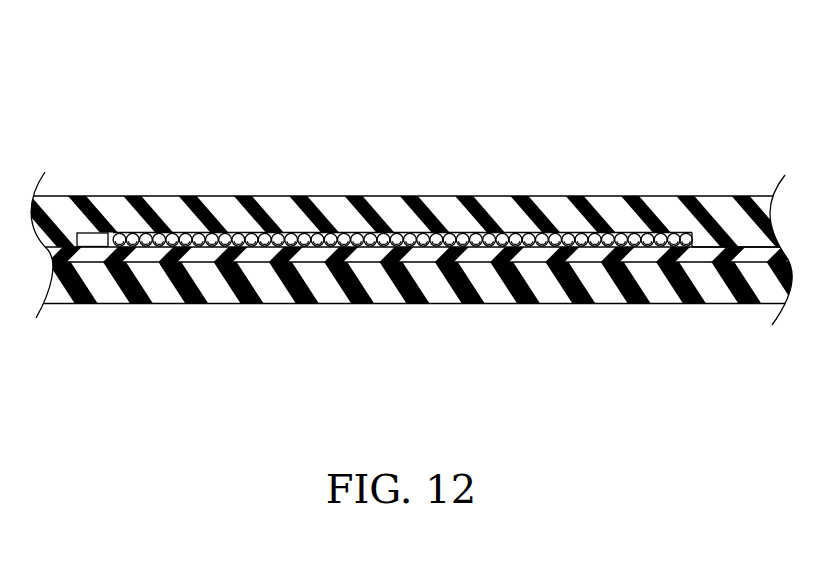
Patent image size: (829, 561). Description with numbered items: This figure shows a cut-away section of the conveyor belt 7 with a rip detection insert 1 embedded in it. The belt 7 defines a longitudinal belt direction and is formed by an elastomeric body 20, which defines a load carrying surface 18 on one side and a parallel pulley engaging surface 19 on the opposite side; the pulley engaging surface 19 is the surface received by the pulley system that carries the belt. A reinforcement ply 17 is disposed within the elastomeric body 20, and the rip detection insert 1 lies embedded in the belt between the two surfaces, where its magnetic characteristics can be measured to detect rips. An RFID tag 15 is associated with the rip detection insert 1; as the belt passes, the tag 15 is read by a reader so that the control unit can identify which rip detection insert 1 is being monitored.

The conveyor belt 7 is at (415, 219).
The rip detection insert 1 is at (187, 233).
The RFID tag 15 is at (78, 240).
The reinforcement ply 17 is at (758, 247).
The load carrying surface 18 is at (607, 195).
The pulley engaging surface 19 is at (288, 305).
The elastomeric body 20 is at (600, 288).